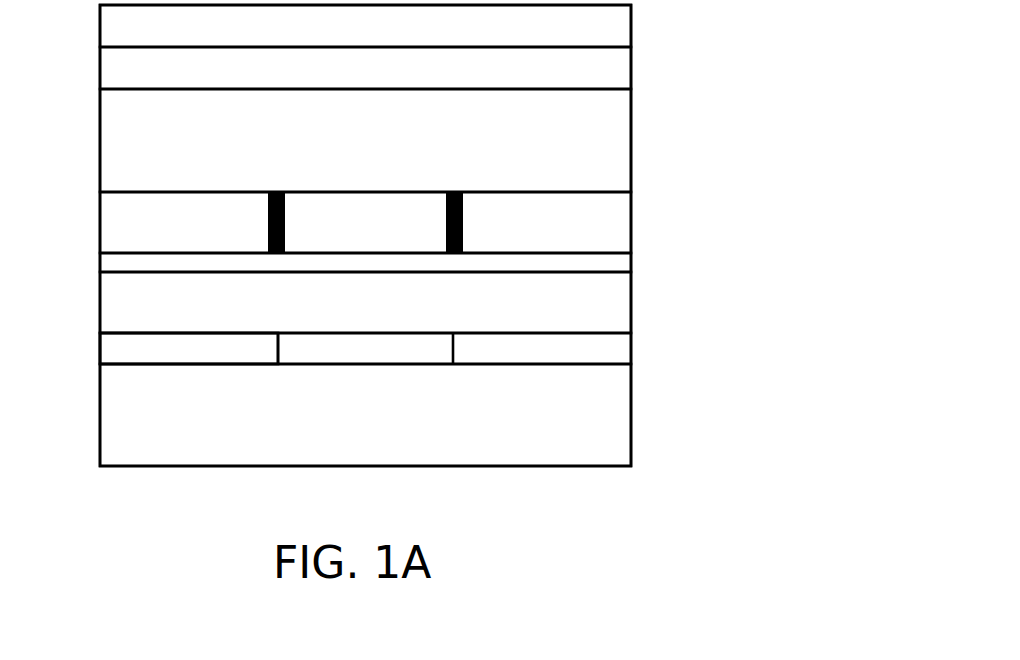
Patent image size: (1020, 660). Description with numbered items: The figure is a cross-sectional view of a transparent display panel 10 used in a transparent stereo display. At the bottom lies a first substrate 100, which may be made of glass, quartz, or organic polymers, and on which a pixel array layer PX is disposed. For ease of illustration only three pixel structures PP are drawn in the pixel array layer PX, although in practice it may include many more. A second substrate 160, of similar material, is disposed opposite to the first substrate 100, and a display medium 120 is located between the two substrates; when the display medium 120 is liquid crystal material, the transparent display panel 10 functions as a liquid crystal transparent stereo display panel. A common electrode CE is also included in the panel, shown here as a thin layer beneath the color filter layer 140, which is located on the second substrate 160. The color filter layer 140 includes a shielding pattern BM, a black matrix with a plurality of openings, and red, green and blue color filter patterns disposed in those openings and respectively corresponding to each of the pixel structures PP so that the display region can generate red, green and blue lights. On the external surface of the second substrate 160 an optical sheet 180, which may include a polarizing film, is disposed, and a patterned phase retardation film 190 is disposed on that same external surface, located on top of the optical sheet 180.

The transparent display panel 10 is at (712, 515).
The patterned phase retardation film 190 is at (620, 29).
The optical sheet 180 is at (620, 73).
The second substrate 160 is at (620, 144).
The color filter layer 140 is at (620, 224).
The shielding pattern BM is at (278, 254).
The common electrode CE is at (620, 262).
The display medium 120 is at (620, 298).
The pixel array layer PX is at (640, 334).
The pixel structures PP is at (186, 332).
The first substrate 100 is at (620, 425).